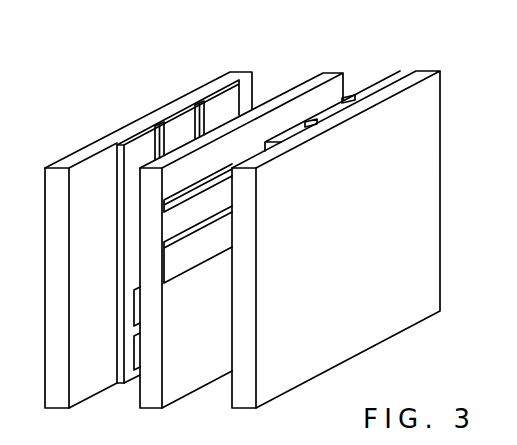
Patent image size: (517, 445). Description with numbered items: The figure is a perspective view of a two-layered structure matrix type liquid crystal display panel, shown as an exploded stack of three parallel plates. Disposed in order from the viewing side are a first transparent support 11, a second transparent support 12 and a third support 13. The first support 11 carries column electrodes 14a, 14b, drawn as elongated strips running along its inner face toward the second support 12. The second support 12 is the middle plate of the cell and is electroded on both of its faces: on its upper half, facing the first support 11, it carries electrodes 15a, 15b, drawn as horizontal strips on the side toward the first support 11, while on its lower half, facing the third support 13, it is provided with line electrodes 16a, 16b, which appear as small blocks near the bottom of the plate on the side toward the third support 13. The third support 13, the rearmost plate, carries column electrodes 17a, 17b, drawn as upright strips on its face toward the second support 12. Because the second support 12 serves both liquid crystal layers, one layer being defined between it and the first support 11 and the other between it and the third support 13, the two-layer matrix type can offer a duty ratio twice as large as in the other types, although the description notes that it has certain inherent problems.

The first transparent support 11 is at (432, 174).
The second transparent support 12 is at (328, 78).
The third support 13 is at (188, 92).
The column electrode 14a is at (393, 78).
The column electrode 14b is at (347, 100).
The electrode 15a is at (192, 208).
The electrode 15b is at (199, 253).
The line electrode 16a is at (134, 303).
The line electrode 16b is at (134, 353).
The column electrode 17a is at (227, 100).
The column electrode 17b is at (180, 125).